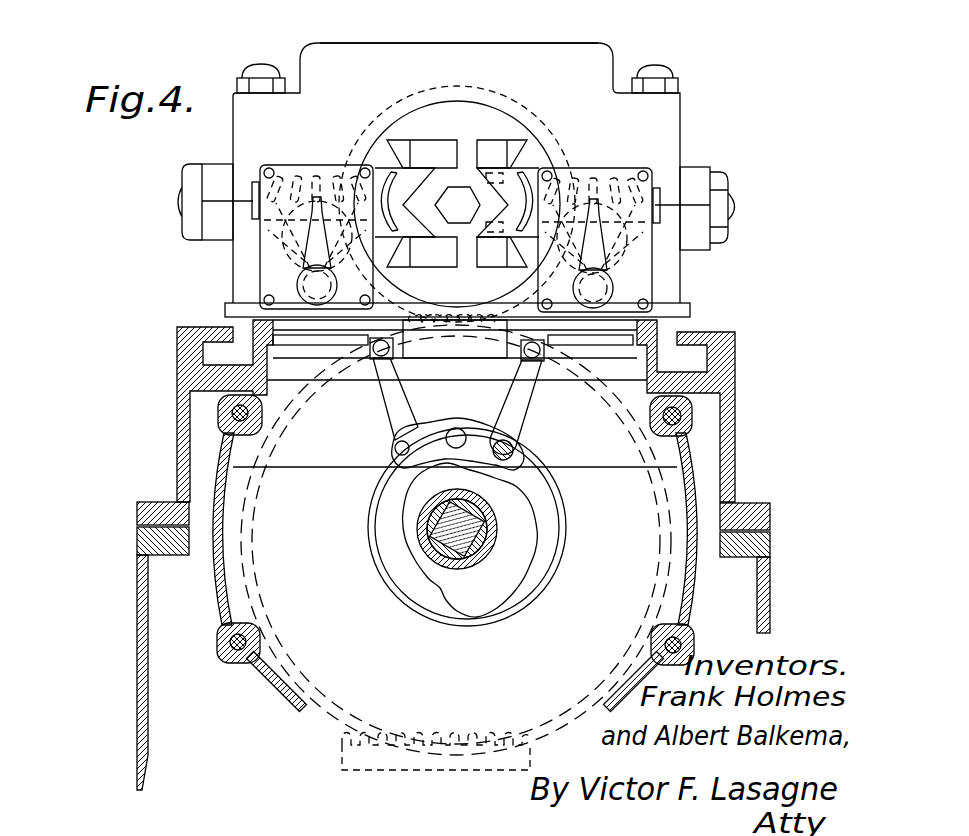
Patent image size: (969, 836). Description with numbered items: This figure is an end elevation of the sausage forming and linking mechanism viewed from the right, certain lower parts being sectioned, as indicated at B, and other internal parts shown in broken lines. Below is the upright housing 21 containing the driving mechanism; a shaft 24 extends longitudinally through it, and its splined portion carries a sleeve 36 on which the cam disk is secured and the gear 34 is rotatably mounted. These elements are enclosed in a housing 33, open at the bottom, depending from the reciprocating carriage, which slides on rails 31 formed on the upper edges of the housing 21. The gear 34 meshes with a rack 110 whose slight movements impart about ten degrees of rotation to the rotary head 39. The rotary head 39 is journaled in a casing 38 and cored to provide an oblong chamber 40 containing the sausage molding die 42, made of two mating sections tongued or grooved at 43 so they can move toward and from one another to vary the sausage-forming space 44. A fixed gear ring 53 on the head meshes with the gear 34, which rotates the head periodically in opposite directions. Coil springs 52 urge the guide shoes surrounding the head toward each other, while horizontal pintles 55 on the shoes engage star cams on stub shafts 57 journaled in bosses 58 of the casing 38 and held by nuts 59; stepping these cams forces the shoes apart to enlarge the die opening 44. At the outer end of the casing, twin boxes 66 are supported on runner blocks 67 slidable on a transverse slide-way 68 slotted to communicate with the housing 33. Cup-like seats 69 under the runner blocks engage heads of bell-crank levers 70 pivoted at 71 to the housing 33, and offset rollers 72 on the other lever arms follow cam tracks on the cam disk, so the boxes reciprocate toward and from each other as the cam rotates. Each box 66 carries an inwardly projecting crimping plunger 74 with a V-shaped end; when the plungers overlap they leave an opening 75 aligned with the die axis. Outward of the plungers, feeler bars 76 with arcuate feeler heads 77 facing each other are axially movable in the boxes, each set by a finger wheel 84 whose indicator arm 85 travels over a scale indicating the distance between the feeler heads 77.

The casing B is at (620, 70).
The upright housing 21 is at (138, 605).
The shaft 24 is at (440, 529).
The rails 31 is at (693, 387).
The housing 33 is at (220, 580).
The gear 34 is at (401, 731).
The sleeve 36 is at (487, 503).
The casing 38 is at (532, 53).
The rotary head 39 is at (457, 112).
The chamber 40 is at (393, 137).
The sausage molding die 42 is at (420, 144).
The tongue or groove 43 is at (476, 176).
The sausage-forming space 44 is at (457, 215).
The coil springs 52 is at (478, 540).
The gear ring 53 is at (549, 100).
The pintles 55 is at (503, 577).
The stub shafts 57 is at (738, 208).
The bosses 58 is at (693, 170).
The nuts 59 is at (723, 175).
The boxes 66 is at (260, 252).
The runner blocks 67 is at (687, 311).
The transverse track 68 is at (445, 323).
The cup-like seats 69 is at (374, 364).
The bell-crank levers 70 is at (388, 432).
The pivots 71 is at (398, 455).
The offset rollers 72 is at (441, 429).
The sausage crimping plunger 74 is at (385, 170).
The opening 75 is at (407, 580).
The feeler bars 76 is at (657, 187).
The feeler heads 77 is at (556, 178).
The finger wheel 84 is at (297, 285).
The indicator arm 85 is at (598, 256).
The rack 110 is at (393, 762).